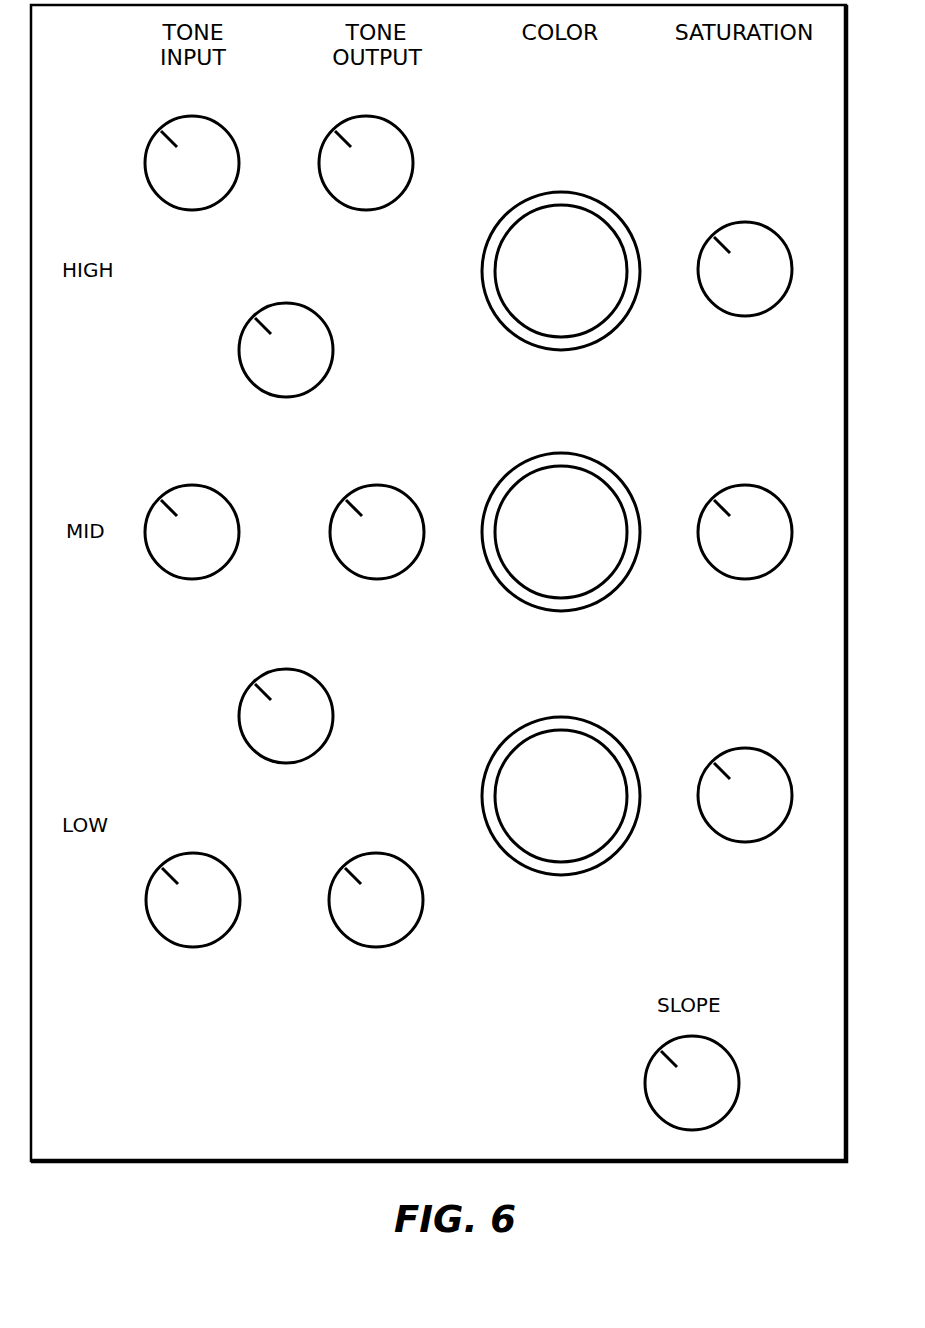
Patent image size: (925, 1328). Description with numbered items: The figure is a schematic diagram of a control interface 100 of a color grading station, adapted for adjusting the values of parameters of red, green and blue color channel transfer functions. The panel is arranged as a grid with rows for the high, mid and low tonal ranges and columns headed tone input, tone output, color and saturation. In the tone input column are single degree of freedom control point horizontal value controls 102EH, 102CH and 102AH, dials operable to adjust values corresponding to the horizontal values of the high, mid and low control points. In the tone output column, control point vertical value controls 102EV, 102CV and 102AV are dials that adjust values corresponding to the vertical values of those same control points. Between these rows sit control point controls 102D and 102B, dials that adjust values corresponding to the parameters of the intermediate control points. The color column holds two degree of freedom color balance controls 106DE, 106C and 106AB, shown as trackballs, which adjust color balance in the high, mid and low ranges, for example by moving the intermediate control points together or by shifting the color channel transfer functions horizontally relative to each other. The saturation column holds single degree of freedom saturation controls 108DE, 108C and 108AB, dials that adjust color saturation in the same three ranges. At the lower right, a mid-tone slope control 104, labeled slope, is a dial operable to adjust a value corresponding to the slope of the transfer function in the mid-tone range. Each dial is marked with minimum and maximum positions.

The control interface 100 is at (573, 1163).
The control point horizontal value control 102EH is at (188, 117).
The control point vertical value control 102EV is at (362, 117).
The control point control 102D is at (283, 304).
The control point horizontal value control 102CH is at (188, 486).
The control point vertical value control 102CV is at (373, 486).
The control point control 102B is at (283, 670).
The control point horizontal value control 102AH is at (189, 854).
The control point vertical value control 102AV is at (372, 854).
The mid-tone slope control 104 is at (733, 1061).
The color balance control 106DE is at (547, 193).
The color balance control 106C is at (547, 454).
The color balance control 106AB is at (553, 718).
The saturation control 108DE is at (741, 223).
The saturation control 108C is at (741, 486).
The saturation control 108AB is at (741, 749).